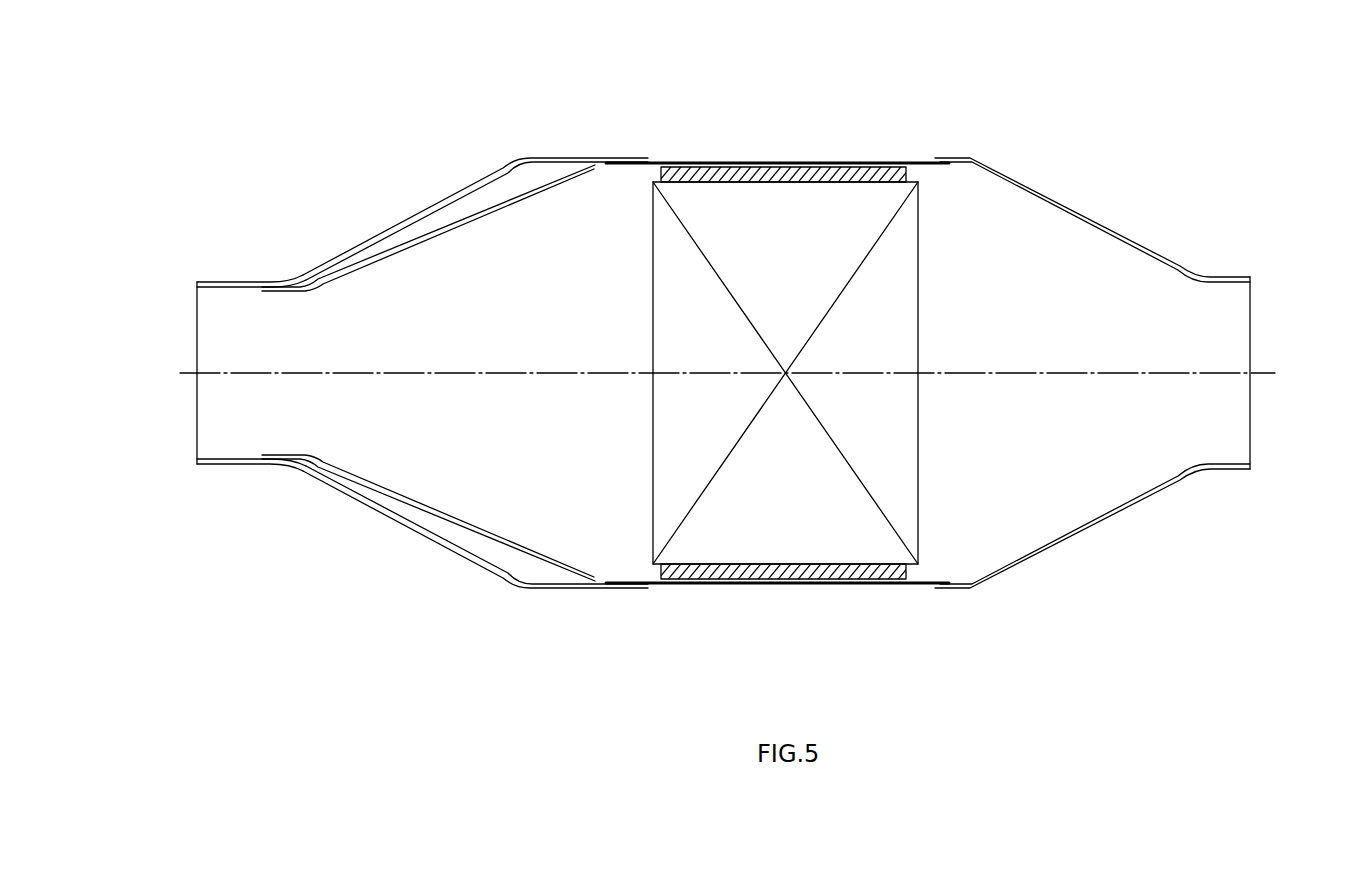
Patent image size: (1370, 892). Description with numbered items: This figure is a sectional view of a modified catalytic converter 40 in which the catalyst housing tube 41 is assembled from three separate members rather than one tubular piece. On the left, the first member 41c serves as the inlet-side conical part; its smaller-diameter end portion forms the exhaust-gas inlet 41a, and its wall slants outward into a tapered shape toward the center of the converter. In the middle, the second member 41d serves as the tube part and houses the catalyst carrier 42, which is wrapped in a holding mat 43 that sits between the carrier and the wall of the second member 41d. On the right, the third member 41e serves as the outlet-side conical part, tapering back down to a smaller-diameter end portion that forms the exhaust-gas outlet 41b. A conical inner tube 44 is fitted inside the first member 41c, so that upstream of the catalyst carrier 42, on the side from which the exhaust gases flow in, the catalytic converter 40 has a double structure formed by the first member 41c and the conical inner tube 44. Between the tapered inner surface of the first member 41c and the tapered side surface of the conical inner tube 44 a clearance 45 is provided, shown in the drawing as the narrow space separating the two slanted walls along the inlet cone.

The catalytic converter 40 is at (1063, 113).
The catalyst housing tube 41 is at (724, 335).
The exhaust-gas inlet 41a is at (197, 340).
The exhaust-gas outlet 41b is at (1250, 332).
The first member 41c is at (398, 220).
The second member 41d is at (722, 162).
The third member 41e is at (1092, 218).
The catalyst carrier 42 is at (838, 537).
The holding mat 43 is at (838, 171).
The conical inner tube 44 is at (433, 228).
The clearance 45 is at (367, 247).